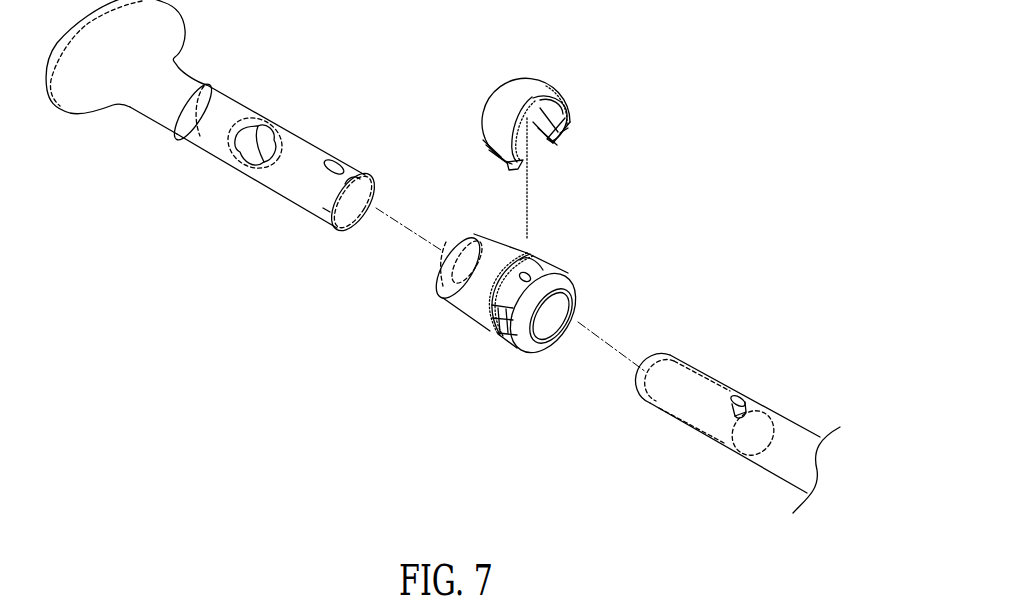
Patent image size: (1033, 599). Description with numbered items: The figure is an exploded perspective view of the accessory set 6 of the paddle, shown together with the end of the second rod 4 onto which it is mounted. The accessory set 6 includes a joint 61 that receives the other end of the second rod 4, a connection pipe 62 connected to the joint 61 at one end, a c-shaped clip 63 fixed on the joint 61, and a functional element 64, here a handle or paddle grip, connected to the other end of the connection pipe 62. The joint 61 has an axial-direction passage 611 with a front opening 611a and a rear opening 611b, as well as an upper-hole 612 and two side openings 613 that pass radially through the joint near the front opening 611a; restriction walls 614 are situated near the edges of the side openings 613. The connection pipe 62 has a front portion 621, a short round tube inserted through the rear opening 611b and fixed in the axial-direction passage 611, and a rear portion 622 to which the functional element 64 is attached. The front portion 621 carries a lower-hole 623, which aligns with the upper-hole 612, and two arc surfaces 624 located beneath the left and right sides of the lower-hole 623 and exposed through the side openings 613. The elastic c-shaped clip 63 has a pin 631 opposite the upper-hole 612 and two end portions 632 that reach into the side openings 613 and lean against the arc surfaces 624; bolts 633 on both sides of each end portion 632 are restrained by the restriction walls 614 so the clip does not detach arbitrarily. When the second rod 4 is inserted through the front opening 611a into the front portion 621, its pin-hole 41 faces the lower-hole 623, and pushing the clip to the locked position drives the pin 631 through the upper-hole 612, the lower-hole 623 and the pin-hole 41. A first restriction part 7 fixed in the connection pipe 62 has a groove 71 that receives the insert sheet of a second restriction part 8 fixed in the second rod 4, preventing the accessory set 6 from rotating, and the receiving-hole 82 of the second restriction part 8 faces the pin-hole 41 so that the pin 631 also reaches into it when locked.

The second rod 4 is at (790, 435).
The pin-hole 41 is at (735, 398).
The accessory set 6 is at (237, 382).
The joint 61 is at (460, 298).
The axial-direction passage 611 is at (548, 322).
The front opening 611a is at (570, 290).
The rear opening 611b is at (440, 270).
The upper-hole 612 is at (533, 273).
The side openings 613 is at (508, 320).
The restriction walls 614 is at (480, 323).
The connection pipe 62 is at (290, 188).
The front portion 621 is at (354, 172).
The rear portion 622 is at (222, 90).
The lower-hole 623 is at (333, 160).
The arc surfaces 624 is at (323, 208).
The c-shaped clip 63 is at (511, 95).
The pin 631 is at (547, 114).
The end portions 632 is at (560, 140).
The bolts 633 is at (560, 143).
The functional element 64 is at (166, 26).
The first restriction part 7 is at (208, 137).
The groove 71 is at (257, 132).
The second restriction part 8 is at (692, 380).
The receiving-hole 82 is at (738, 415).